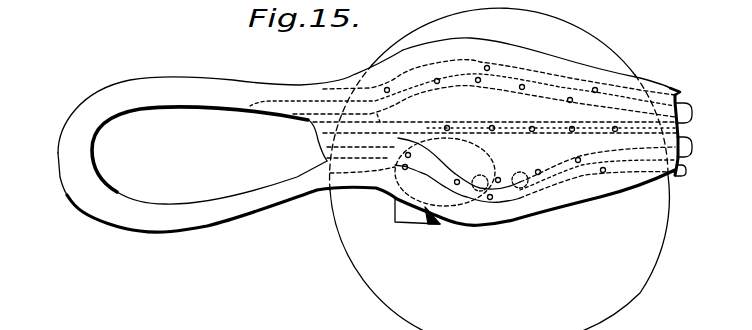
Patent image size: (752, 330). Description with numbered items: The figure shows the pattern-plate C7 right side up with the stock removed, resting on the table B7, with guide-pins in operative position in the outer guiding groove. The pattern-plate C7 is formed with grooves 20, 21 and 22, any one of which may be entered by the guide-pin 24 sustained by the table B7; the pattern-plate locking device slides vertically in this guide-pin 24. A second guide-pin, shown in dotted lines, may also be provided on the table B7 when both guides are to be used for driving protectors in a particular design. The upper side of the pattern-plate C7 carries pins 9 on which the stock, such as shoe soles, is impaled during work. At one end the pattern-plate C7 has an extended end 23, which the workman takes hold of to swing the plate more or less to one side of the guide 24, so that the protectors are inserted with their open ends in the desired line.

The pins 9 is at (387, 90).
The groove 20 is at (677, 166).
The groove 21 is at (677, 128).
The groove 22 is at (679, 96).
The extended end 23 is at (65, 177).
The guide-pin 24 is at (480, 191).
The pattern-plate C7 is at (398, 62).
The table B7 is at (630, 267).